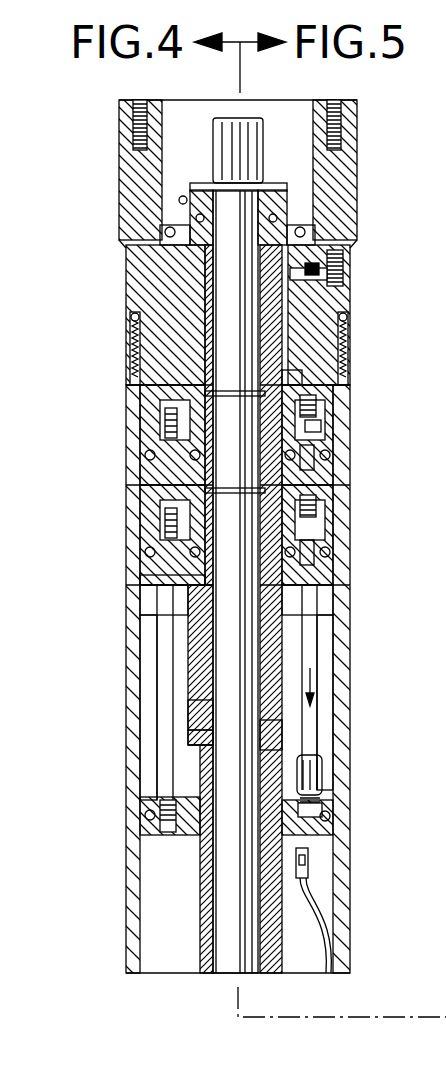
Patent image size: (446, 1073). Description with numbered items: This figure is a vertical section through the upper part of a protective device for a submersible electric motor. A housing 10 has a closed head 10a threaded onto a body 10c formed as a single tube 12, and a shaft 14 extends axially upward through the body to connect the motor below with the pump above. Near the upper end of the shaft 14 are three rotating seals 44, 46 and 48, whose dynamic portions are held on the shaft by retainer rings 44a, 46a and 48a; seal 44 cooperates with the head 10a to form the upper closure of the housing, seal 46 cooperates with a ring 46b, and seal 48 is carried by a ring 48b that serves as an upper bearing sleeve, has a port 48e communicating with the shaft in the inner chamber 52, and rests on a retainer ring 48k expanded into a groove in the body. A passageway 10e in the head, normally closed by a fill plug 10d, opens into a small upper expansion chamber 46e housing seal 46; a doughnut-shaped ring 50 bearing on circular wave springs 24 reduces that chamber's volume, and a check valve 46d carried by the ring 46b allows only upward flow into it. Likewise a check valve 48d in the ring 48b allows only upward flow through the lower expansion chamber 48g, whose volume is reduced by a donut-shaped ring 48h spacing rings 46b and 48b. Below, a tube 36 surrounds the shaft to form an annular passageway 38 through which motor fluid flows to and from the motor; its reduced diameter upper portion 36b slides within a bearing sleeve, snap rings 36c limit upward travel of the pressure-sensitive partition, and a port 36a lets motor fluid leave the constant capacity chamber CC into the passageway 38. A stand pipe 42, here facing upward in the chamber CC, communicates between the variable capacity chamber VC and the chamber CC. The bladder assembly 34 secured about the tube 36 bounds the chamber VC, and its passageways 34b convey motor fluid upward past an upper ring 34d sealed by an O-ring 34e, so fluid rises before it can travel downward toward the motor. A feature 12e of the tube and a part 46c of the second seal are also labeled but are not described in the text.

The housing 10 is at (362, 178).
The closed head 10a is at (127, 270).
The body 10c is at (345, 644).
The fill plug 10d is at (346, 266).
The passageway 10e is at (292, 294).
The single tube 12 is at (128, 856).
The mandrel shoulder 12e is at (340, 580).
The shaft 14 is at (230, 975).
The circular wave springs 24 is at (322, 426).
The bladder assembly 34 is at (340, 872).
The passageways 34b is at (325, 905).
The upper ring 34d is at (324, 794).
The O-ring 34e is at (150, 812).
The tube 36 is at (205, 893).
The port 36a is at (200, 756).
The reduced diameter upper portion 36b is at (196, 740).
The snap rings 36c is at (290, 740).
The annular passageway 38 is at (213, 975).
The stand pipe 42 is at (160, 650).
The rotating seal 44 is at (190, 211).
The retainer ring 44a is at (185, 198).
The rotating seal 46 is at (192, 406).
The retainer ring 46a is at (205, 393).
The ring 46b is at (160, 447).
The bearing race 46c is at (328, 466).
The check valve 46d is at (310, 445).
The upper expansion chamber 46e is at (300, 372).
The rotating seal 48 is at (192, 516).
The retainer ring 48a is at (205, 490).
The ring 48b is at (170, 580).
The one-way check valve 48d is at (316, 545).
The port 48e is at (178, 610).
The lower expansion chamber 48g is at (318, 500).
The donut-shaped ring 48h is at (160, 548).
The retainer ring 48k is at (305, 600).
The doughnut-shaped ring 50 is at (318, 404).
The inner chamber 52 is at (312, 706).
The constant capacity chamber CC is at (150, 690).
The variable capacity chamber VC is at (186, 966).